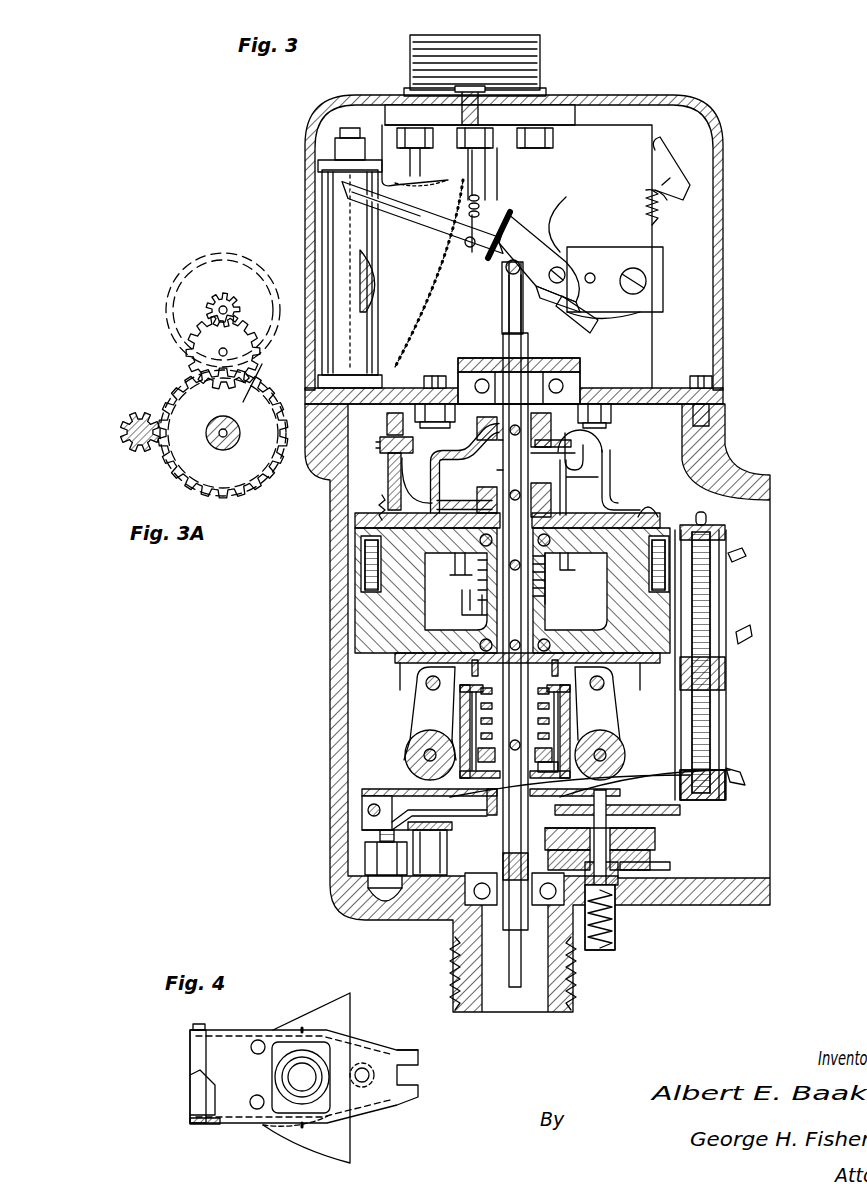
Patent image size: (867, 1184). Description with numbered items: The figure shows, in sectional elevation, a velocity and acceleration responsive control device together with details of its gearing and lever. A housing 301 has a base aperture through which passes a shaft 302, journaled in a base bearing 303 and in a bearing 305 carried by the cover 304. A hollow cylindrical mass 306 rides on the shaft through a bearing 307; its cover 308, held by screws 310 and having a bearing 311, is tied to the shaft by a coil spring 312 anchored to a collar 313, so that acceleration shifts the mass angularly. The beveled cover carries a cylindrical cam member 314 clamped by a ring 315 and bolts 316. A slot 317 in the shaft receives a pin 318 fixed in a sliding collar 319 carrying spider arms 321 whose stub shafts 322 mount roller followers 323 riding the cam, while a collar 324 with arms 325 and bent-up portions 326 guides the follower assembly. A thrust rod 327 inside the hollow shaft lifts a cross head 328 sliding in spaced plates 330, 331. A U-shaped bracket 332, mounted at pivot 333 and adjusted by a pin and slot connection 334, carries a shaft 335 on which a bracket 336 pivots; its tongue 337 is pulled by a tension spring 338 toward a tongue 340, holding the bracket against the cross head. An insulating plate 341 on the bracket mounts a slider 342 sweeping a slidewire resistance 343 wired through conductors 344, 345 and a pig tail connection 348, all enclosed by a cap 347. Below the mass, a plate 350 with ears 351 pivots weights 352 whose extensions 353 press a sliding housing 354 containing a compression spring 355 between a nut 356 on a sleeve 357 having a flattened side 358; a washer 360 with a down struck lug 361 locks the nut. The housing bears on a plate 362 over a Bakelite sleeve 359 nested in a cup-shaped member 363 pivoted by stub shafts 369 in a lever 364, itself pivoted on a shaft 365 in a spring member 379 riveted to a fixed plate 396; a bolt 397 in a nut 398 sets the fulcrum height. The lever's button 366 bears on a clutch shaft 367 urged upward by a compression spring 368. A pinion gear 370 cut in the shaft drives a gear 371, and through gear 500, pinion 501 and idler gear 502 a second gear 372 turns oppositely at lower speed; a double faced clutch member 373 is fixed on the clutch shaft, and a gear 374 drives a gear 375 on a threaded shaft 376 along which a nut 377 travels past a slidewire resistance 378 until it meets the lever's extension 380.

In FIG. 3, the housing 301 is at (345, 654).
In FIG. 3, the shaft 302 is at (520, 990).
In FIG. 3, the bearing 303 is at (465, 895).
In FIG. 3, the cover 304 is at (660, 388).
In FIG. 3, the bearing 305 is at (560, 368).
In FIG. 3, the mass 306 is at (370, 603).
In FIG. 3, the bearing 307 is at (601, 590).
In FIG. 3, the cover 308 is at (566, 578).
In FIG. 3, the screws 310 is at (363, 561).
In FIG. 3, the bearing 311 is at (580, 568).
In FIG. 3, the coil spring 312 is at (460, 571).
In FIG. 3, the collar 313 is at (462, 613).
In FIG. 3, the cylindrical cam member 314 is at (606, 468).
In FIG. 3, the clamping ring 315 is at (355, 523).
In FIG. 3, the bolts 316 is at (650, 508).
In FIG. 3, the slot 317 is at (503, 484).
In FIG. 3, the pin 318 is at (486, 428).
In FIG. 3, the collar 319 is at (483, 456).
In FIG. 3, the arms 321 is at (610, 438).
In FIG. 3, the stub shaft 322 is at (387, 428).
In FIG. 3, the roller follower 323 is at (388, 466).
In FIG. 3, the collar 324 is at (465, 469).
In FIG. 3, the arms 325 is at (570, 488).
In FIG. 3, the bent-up portion 326 is at (408, 438).
In FIG. 3, the thrust rod 327 is at (509, 314).
In FIG. 3, the cross head 328 is at (506, 268).
In FIG. 3, the plate 330 is at (502, 294).
In FIG. 3, the plate 331 is at (566, 252).
In FIG. 3, the U-shaped bracket 332 is at (650, 299).
In FIG. 3, the pivot 333 is at (590, 273).
In FIG. 3, the pin and slot connection 334 is at (644, 274).
In FIG. 3, the shaft 335 is at (560, 268).
In FIG. 3, the bracket 336 is at (540, 296).
In FIG. 3, the tongue 337 is at (575, 316).
In FIG. 3, the tension spring 338 is at (660, 221).
In FIG. 3, the tongue 340 is at (670, 152).
In FIG. 3, the insulating plate 341 is at (505, 212).
In FIG. 3, the slider 342 is at (405, 226).
In FIG. 3, the slidewire resistance 343 is at (335, 244).
In FIG. 3, the conductor 344 is at (397, 187).
In FIG. 3, the conductor 345 is at (400, 346).
In FIG. 3, the cap 347 is at (722, 240).
In FIG. 3, the pig tail connection 348 is at (480, 195).
In FIG. 3, the plate 350 is at (400, 688).
In FIG. 3, the ears 351 is at (606, 687).
In FIG. 3, the weight 352 is at (440, 755).
In FIG. 3, the extension 353 is at (597, 729).
In FIG. 3, the housing 354 is at (406, 765).
In FIG. 3, the compression spring 355 is at (592, 703).
In FIG. 3, the nut 356 is at (412, 738).
In FIG. 3, the sleeve 357 is at (415, 690).
In FIG. 3, the flattened side 358 is at (572, 728).
In FIG. 3, the sleeve 359 is at (554, 773).
In FIG. 4, the sleeve 359 is at (330, 1060).
In FIG. 3, the washer 360 is at (466, 726).
In FIG. 3, the down struck lug 361 is at (565, 729).
In FIG. 3, the plate 362 is at (362, 792).
In FIG. 3, the cup-shaped member 363 is at (452, 853).
In FIG. 4, the cup-shaped member 363 is at (325, 1085).
In FIG. 3, the lever 364 is at (424, 811).
In FIG. 4, the lever 364 is at (215, 1050).
In FIG. 3, the shaft 365 is at (368, 812).
In FIG. 4, the shaft 365 is at (198, 1024).
In FIG. 3, the button 366 is at (570, 781).
In FIG. 3, the clutch shaft 367 is at (605, 880).
In FIG. 3A, the clutch shaft 367 is at (228, 422).
In FIG. 3, the compression spring 368 is at (612, 948).
In FIG. 4, the stub shafts 369 is at (302, 1128).
In FIG. 3, the pinion gear 370 is at (503, 860).
In FIG. 3A, the pinion gear 370 is at (136, 418).
In FIG. 3, the gear 371 is at (660, 881).
In FIG. 3A, the gear 371 is at (188, 375).
In FIG. 3, the second gear 372 is at (655, 861).
In FIG. 3A, the second gear 372 is at (273, 375).
In FIG. 3, the double faced clutch member 373 is at (665, 862).
In FIG. 3, the gear 374 is at (726, 761).
In FIG. 3, the gear 375 is at (682, 811).
In FIG. 3, the threaded shaft 376 is at (726, 681).
In FIG. 3, the nut 377 is at (728, 703).
In FIG. 3, the slidewire resistance 378 is at (728, 593).
In FIG. 3, the spring member 379 is at (365, 843).
In FIG. 4, the spring member 379 is at (200, 1101).
In FIG. 3, the extension 380 is at (745, 775).
In FIG. 4, the extension 380 is at (418, 1093).
In FIG. 3, the plate 396 is at (657, 833).
In FIG. 4, the plate 396 is at (350, 1015).
In FIG. 3, the bolt 397 is at (375, 912).
In FIG. 3, the nut 398 is at (365, 861).
In FIG. 3A, the gear 500 is at (180, 321).
In FIG. 3A, the pinion 501 is at (220, 293).
In FIG. 3A, the idler gear 502 is at (238, 341).